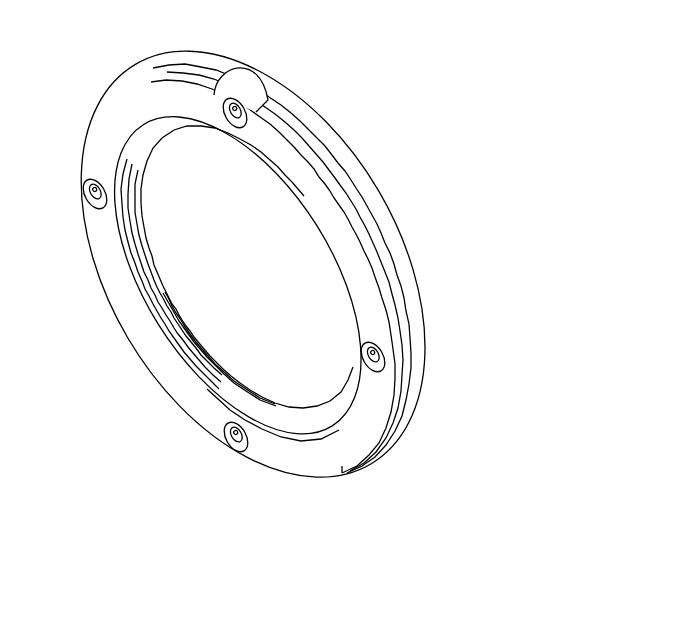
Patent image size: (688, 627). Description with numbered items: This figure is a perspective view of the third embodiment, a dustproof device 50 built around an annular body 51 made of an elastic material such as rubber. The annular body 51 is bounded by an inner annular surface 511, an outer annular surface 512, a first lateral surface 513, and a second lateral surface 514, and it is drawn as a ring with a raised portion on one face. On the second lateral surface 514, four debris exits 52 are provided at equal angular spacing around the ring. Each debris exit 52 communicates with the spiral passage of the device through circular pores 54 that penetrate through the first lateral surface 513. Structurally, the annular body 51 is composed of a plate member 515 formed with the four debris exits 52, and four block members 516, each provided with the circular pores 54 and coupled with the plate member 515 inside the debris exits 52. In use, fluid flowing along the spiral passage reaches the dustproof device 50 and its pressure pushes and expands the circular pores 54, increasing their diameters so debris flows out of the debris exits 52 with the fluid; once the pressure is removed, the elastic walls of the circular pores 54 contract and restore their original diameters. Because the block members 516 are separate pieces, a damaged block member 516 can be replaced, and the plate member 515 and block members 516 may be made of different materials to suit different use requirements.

The dustproof device 50 is at (392, 143).
The annular body 51 is at (487, 163).
The inner annular surface 511 is at (137, 293).
The outer annular surface 512 is at (370, 245).
The first lateral surface 513 is at (432, 340).
The second lateral surface 514 is at (314, 452).
The plate member 515 is at (372, 276).
The block member 516 is at (232, 128).
The debris exit 52 is at (232, 128).
The circular pore 54 is at (255, 116).